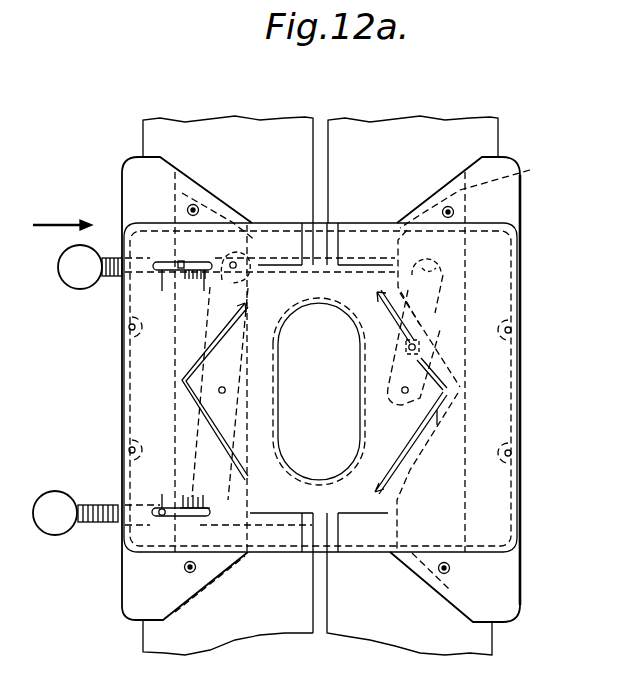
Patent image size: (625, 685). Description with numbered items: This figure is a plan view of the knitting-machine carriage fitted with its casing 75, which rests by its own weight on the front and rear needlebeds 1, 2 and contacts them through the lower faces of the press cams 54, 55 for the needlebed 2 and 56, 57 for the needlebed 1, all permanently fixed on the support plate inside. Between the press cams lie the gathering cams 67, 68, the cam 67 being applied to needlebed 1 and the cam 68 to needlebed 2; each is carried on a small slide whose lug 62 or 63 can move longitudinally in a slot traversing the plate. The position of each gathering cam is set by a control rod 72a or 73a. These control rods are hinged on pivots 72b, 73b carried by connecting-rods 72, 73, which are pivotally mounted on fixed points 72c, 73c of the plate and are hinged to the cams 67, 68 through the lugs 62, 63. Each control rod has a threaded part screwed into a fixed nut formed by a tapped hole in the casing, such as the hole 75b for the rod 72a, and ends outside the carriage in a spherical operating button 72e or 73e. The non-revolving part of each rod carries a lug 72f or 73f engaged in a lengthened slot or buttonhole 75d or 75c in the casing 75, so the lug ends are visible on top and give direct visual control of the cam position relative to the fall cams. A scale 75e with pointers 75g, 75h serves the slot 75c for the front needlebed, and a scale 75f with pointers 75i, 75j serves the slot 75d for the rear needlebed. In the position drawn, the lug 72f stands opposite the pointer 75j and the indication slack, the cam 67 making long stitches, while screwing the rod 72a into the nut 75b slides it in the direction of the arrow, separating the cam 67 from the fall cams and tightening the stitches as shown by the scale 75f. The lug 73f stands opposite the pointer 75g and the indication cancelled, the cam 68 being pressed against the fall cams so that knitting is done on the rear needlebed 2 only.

The needlebed 1 is at (232, 133).
The needlebed 2 is at (392, 140).
The press cam 54 is at (447, 587).
The press cam 55 is at (477, 190).
The press cam 56 is at (210, 586).
The press cam 57 is at (187, 183).
The lug 62 is at (408, 390).
The lug 63 is at (228, 389).
The gathering cam 67 is at (437, 417).
The gathering cam 68 is at (227, 445).
The connecting-rod 72 is at (440, 310).
The control rod 72a is at (358, 253).
The pivot 72b is at (443, 262).
The fixed point 72c is at (416, 346).
The operating button 72e is at (73, 279).
The lug 72f is at (187, 263).
The connecting-rod 73 is at (200, 407).
The control rod 73a is at (193, 512).
The pivot 73b is at (253, 553).
The fixed point 73c is at (233, 253).
The operating button 73e is at (48, 535).
The lug 73f is at (153, 520).
The casing 75 is at (503, 512).
The tapped hole 75b is at (118, 248).
The slot 75c is at (170, 515).
The slot 75d is at (163, 262).
The scale 75e is at (172, 503).
The scale 75f is at (205, 283).
The pointer 75g is at (160, 508).
The pointer 75h is at (182, 498).
The pointer 75i is at (170, 280).
The pointer 75j is at (180, 290).